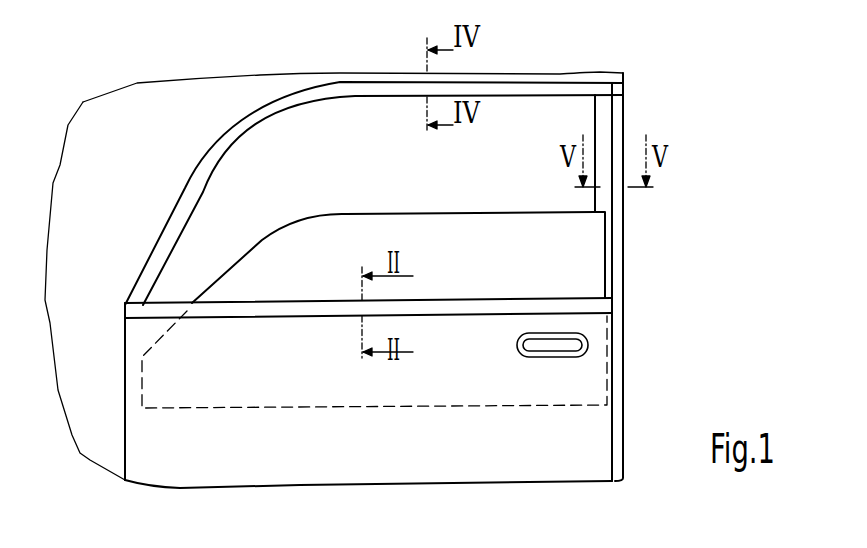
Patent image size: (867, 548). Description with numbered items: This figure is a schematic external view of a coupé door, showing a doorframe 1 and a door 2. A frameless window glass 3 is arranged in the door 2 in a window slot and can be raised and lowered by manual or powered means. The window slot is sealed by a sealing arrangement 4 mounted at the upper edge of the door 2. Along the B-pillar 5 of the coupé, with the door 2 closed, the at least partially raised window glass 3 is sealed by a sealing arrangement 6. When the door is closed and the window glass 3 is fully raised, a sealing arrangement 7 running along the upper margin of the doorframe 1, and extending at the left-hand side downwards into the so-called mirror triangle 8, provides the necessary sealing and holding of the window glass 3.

The doorframe 1 is at (568, 72).
The door 2 is at (590, 427).
The window glass 3 is at (312, 223).
The sealing arrangement 4 is at (568, 298).
The B-pillar 5 is at (623, 311).
The sealing arrangement 6 is at (594, 115).
The sealing arrangement 7 is at (362, 100).
The mirror triangle 8 is at (175, 285).